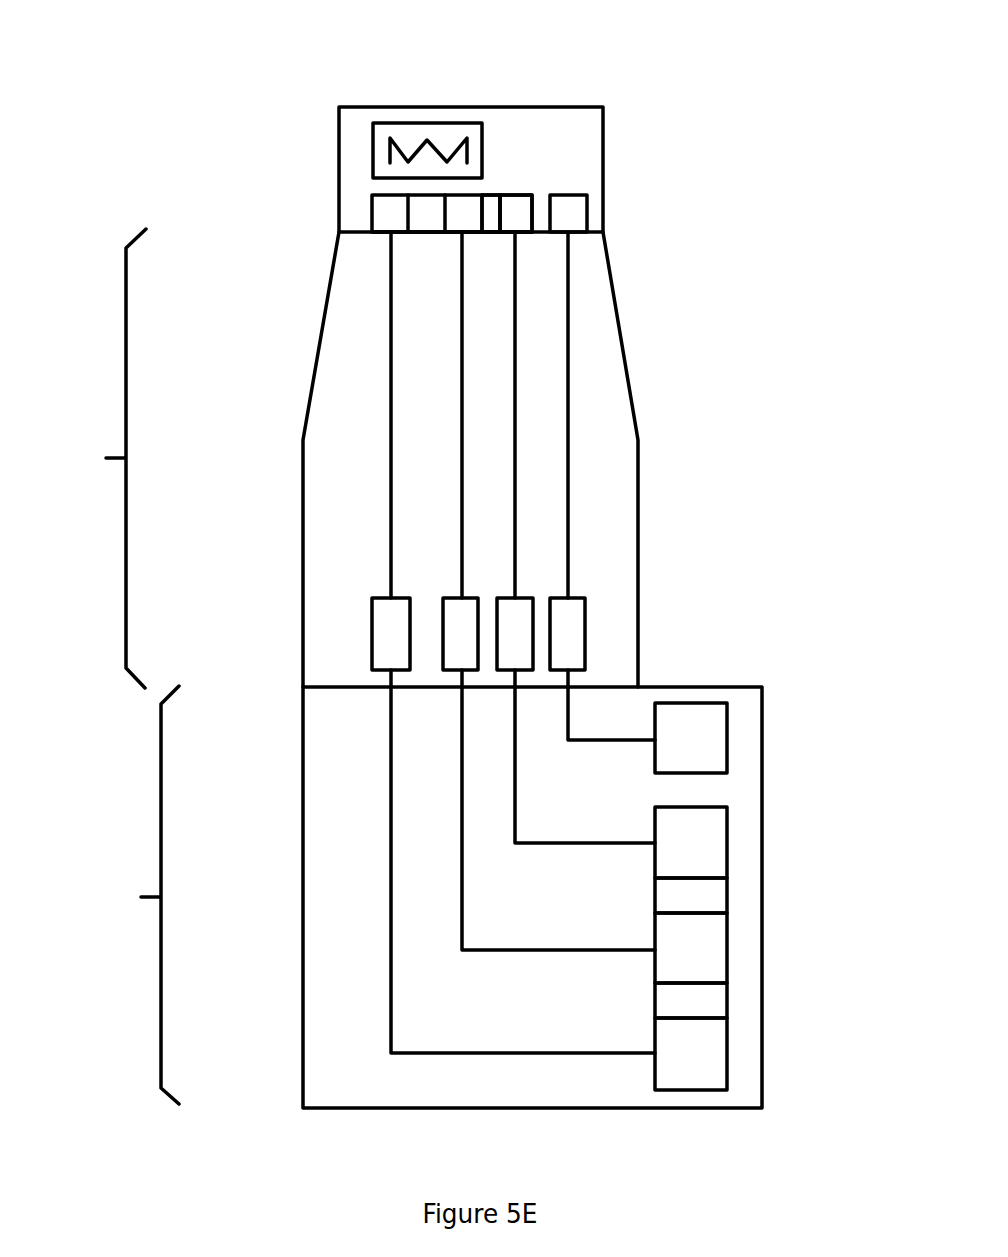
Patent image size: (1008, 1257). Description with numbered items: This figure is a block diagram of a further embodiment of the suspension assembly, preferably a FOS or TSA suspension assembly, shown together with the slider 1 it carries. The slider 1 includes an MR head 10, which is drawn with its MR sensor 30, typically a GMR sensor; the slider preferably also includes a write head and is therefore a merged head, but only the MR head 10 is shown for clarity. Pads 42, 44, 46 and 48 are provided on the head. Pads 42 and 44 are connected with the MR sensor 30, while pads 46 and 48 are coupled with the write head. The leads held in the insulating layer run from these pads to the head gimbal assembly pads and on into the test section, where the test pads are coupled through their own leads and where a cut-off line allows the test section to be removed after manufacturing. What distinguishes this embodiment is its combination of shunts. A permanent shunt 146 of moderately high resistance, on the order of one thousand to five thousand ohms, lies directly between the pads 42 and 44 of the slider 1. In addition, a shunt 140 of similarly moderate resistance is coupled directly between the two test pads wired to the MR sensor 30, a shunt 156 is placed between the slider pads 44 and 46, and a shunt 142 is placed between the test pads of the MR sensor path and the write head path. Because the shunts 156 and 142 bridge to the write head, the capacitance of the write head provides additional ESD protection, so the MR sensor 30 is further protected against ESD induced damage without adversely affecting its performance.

The slider 1 is at (583, 107).
The MR head 10 is at (447, 123).
The MR sensor 30 is at (392, 160).
The pad 42 is at (372, 212).
The pad 44 is at (483, 195).
The shunt 156 is at (481, 193).
The pad 46 is at (533, 193).
The pad 48 is at (588, 213).
The permanent shunt 146 is at (428, 232).
The shunt 142 is at (727, 893).
The shunt 140 is at (727, 1000).